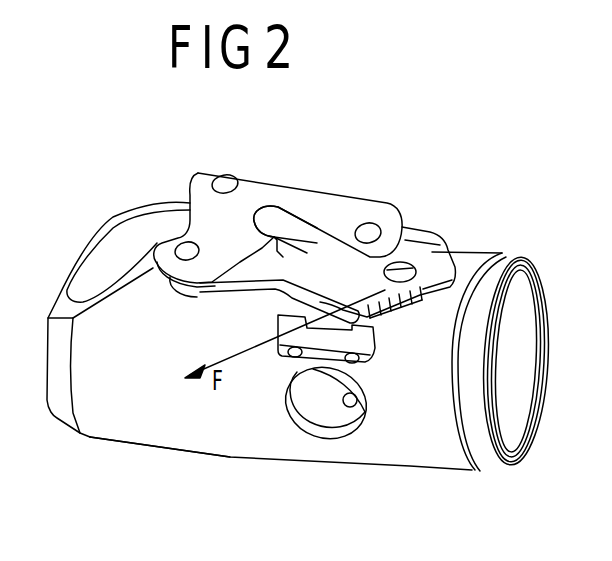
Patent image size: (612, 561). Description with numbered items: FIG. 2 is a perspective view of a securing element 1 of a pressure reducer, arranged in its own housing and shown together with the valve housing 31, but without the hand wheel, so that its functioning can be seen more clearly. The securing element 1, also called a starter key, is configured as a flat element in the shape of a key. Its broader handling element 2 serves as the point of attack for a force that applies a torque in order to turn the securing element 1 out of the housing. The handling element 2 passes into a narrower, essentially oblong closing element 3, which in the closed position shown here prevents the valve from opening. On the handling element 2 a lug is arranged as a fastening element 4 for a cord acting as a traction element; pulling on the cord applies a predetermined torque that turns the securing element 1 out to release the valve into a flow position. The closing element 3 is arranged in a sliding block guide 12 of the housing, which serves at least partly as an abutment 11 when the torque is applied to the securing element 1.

The securing element 1 is at (444, 260).
The handling element 2 is at (327, 280).
The closing element 3 is at (388, 245).
The fastening element 4 is at (405, 266).
The abutment 11 is at (273, 233).
The sliding block guide 12 is at (308, 212).
The valve housing 31 is at (190, 430).